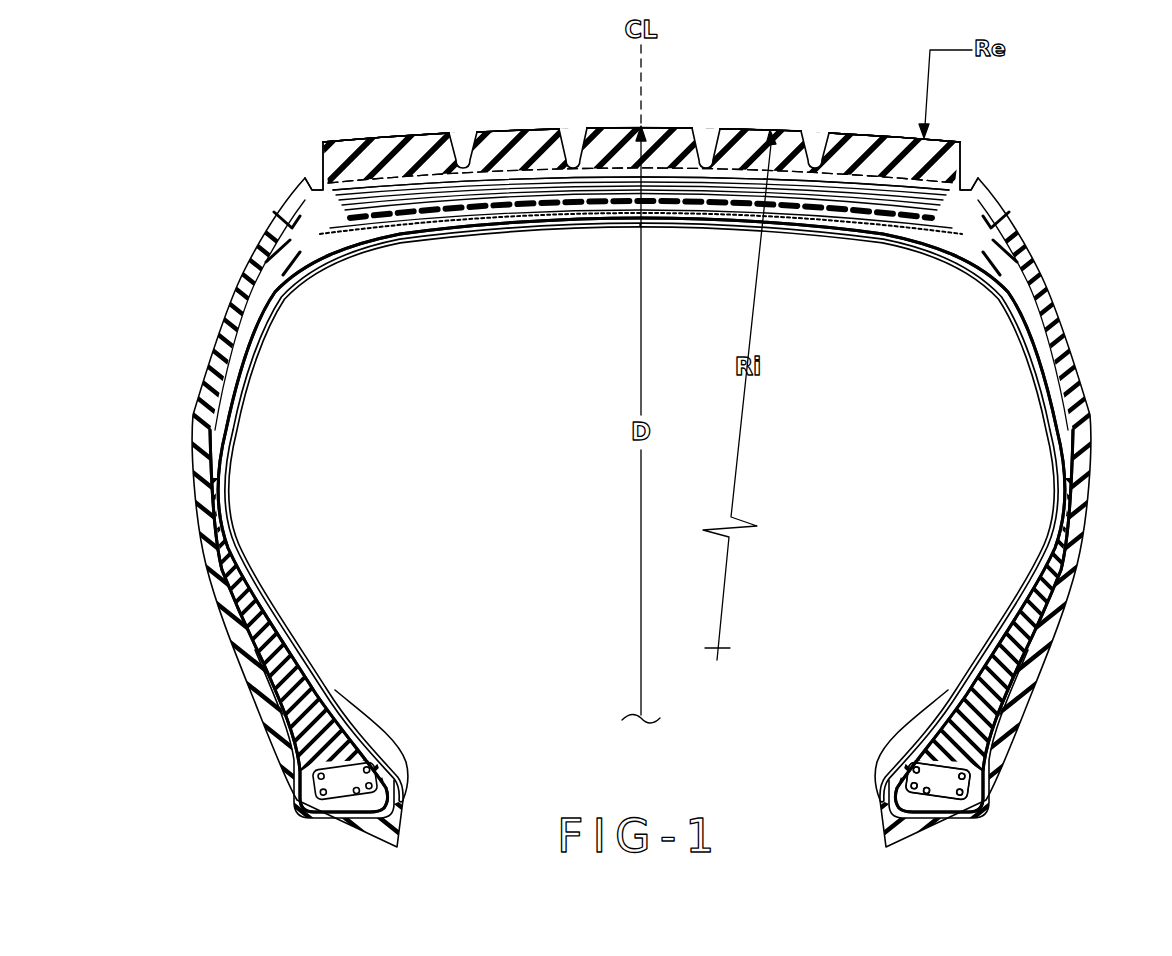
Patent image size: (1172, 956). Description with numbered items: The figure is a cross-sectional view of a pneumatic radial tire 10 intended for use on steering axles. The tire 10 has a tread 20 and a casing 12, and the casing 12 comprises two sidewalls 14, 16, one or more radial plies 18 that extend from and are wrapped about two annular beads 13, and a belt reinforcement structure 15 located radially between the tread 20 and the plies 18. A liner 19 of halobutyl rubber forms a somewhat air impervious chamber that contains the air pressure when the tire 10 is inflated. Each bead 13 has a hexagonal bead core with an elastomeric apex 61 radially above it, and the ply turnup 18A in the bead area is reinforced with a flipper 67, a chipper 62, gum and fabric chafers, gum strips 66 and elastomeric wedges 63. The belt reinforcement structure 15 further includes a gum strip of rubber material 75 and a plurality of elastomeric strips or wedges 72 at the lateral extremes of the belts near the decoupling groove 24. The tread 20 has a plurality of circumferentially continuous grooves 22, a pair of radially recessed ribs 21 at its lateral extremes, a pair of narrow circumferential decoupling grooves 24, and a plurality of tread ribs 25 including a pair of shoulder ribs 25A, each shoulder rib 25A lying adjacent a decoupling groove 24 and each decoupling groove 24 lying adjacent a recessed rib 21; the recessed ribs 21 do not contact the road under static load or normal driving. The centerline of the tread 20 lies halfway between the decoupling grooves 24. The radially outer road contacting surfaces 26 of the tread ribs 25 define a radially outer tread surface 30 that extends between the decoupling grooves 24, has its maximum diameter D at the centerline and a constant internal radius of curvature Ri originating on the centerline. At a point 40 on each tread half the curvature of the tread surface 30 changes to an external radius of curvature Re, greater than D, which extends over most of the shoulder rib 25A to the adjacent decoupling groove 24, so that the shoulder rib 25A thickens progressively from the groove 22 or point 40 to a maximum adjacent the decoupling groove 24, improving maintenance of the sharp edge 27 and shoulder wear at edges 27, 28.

The tire 10 is at (178, 137).
The casing 12 is at (1093, 385).
The bead 13 is at (347, 780).
The sidewall 14 is at (193, 517).
The belt reinforcement structure 15 is at (510, 197).
The sidewall 16 is at (1087, 520).
The radial ply 18 is at (215, 455).
The ply turnup 18A is at (322, 765).
The liner 19 is at (1057, 443).
The tread 20 is at (497, 112).
The radially recessed rib 21 is at (303, 177).
The circumferentially continuous groove 22 is at (458, 135).
The narrow circumferential decoupling groove 24 is at (318, 155).
The tread rib 25 is at (525, 148).
The shoulder rib 25A is at (377, 148).
The radially outer road contacting surface 26 is at (330, 140).
The sharp edge 27 is at (963, 144).
The edge 28 is at (322, 148).
The radially outer tread surface 30 is at (346, 126).
The point of curvature change 40 is at (415, 146).
The elastomeric apex 61 is at (283, 717).
The chipper 62 is at (385, 727).
The elastomeric wedge 63 is at (217, 608).
The gum strip 66 is at (250, 660).
The flipper 67 is at (400, 762).
The elastomeric strip or wedge 72 is at (283, 270).
The gum strip of rubber material 75 is at (1000, 212).